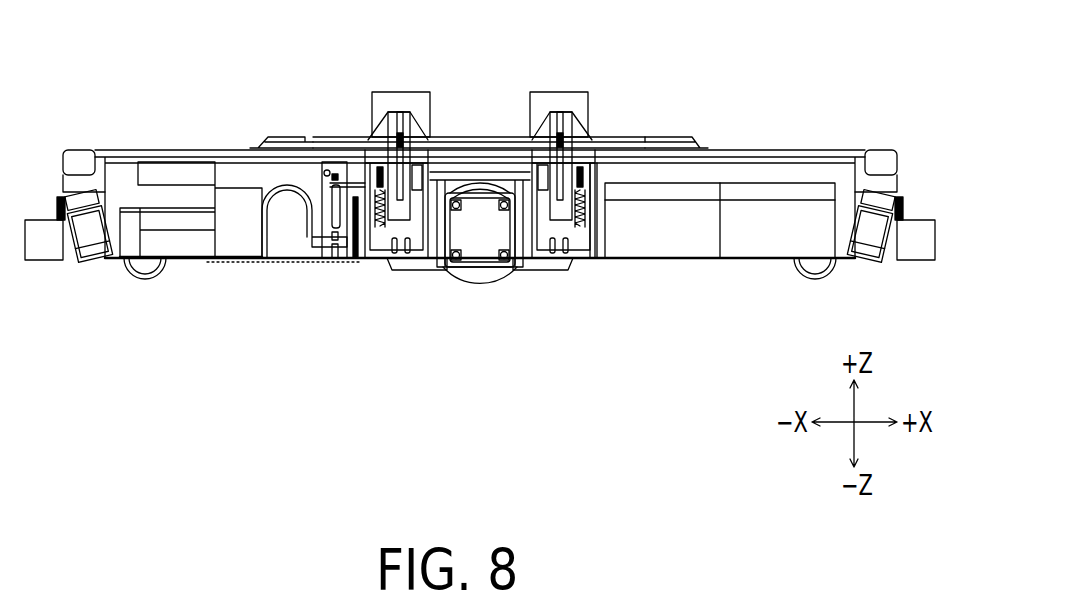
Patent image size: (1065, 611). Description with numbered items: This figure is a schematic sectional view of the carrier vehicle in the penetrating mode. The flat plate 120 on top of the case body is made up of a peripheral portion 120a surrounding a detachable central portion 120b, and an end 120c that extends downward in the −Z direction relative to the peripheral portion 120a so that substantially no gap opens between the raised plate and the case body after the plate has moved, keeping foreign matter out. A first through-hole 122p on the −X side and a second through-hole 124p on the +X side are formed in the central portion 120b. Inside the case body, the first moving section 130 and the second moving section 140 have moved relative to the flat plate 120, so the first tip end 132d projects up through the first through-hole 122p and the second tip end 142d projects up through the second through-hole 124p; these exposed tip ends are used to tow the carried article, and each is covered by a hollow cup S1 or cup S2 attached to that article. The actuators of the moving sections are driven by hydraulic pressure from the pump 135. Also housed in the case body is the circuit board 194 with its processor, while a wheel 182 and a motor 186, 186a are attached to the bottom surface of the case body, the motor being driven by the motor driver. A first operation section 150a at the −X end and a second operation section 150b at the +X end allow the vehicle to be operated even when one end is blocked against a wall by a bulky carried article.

The flat plate 120 is at (276, 120).
The peripheral portion 120a is at (687, 133).
The central portion 120b is at (497, 137).
The end 120c is at (265, 138).
The wheel 182 is at (158, 238).
The circuit board 194 is at (332, 167).
The pump 135 is at (287, 245).
The first moving section 130 is at (393, 283).
The second moving section 140 is at (563, 283).
The first tip end 132d is at (383, 112).
The second tip end 142d is at (577, 113).
The first through-hole 122p is at (412, 127).
The second through-hole 124p is at (549, 127).
The cup S1 is at (407, 92).
The cup S2 is at (562, 92).
The motor 186 is at (707, 198).
The motor 186a is at (480, 253).
The first operation section 150a is at (92, 243).
The second operation section 150b is at (867, 240).